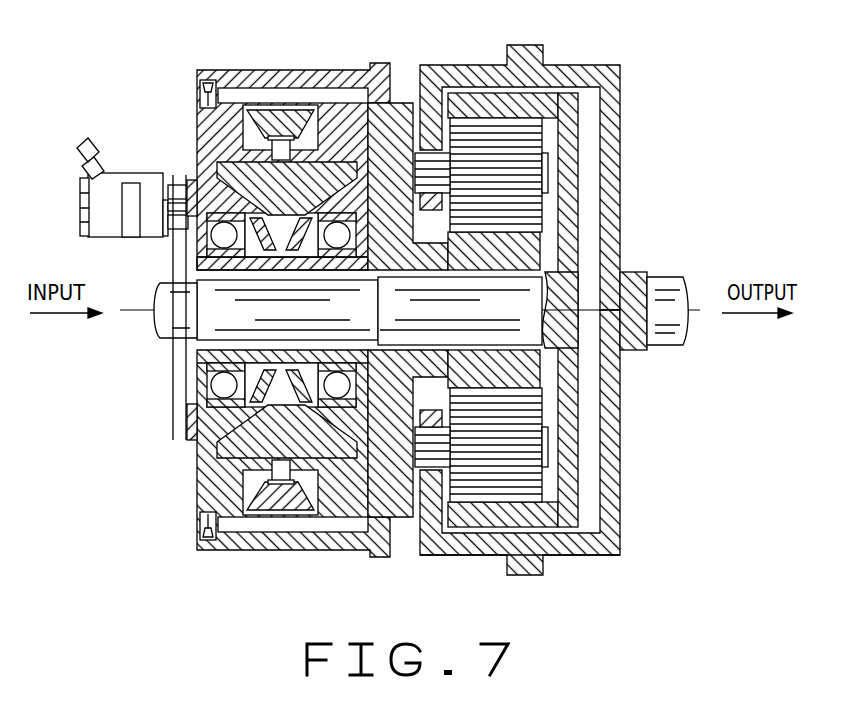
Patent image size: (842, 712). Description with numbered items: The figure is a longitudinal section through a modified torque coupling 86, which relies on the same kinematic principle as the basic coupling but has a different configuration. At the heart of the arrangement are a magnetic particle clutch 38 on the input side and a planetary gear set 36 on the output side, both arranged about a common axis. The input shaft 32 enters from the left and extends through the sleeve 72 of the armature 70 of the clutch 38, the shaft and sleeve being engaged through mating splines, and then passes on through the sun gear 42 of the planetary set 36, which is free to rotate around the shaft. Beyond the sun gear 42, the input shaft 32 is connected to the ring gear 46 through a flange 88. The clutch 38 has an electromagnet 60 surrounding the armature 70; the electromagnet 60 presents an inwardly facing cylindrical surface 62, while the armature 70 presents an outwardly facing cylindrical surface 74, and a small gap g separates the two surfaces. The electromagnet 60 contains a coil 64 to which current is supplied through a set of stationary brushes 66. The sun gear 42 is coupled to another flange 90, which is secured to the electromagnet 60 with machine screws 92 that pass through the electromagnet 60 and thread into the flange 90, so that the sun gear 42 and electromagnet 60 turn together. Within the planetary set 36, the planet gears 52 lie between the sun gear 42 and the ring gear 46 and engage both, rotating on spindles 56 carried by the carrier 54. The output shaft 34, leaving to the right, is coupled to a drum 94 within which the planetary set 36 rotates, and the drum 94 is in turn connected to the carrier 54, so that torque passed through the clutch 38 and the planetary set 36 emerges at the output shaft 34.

The input shaft 32 is at (160, 336).
The output shaft 34 is at (665, 338).
The planetary gear set 36 is at (577, 154).
The magnetic particle clutch 38 is at (203, 132).
The sun gear 42 is at (520, 243).
The ring gear 46 is at (515, 110).
The planet gears 52 is at (517, 167).
The carrier 54 is at (420, 540).
The spindles 56 is at (543, 437).
The electromagnet 60 is at (347, 515).
The cylindrical surface 62 is at (186, 440).
The coil 64 is at (245, 462).
The brushes 66 is at (167, 172).
The armature 70 is at (204, 94).
The sleeve 72 is at (233, 266).
The cylindrical surface 74 is at (326, 135).
The modified torque coupling 86 is at (63, 209).
The flange 88 is at (572, 382).
The flange 90 is at (400, 137).
The machine screws 92 is at (243, 95).
The drum 94 is at (570, 549).
The gap g is at (212, 522).